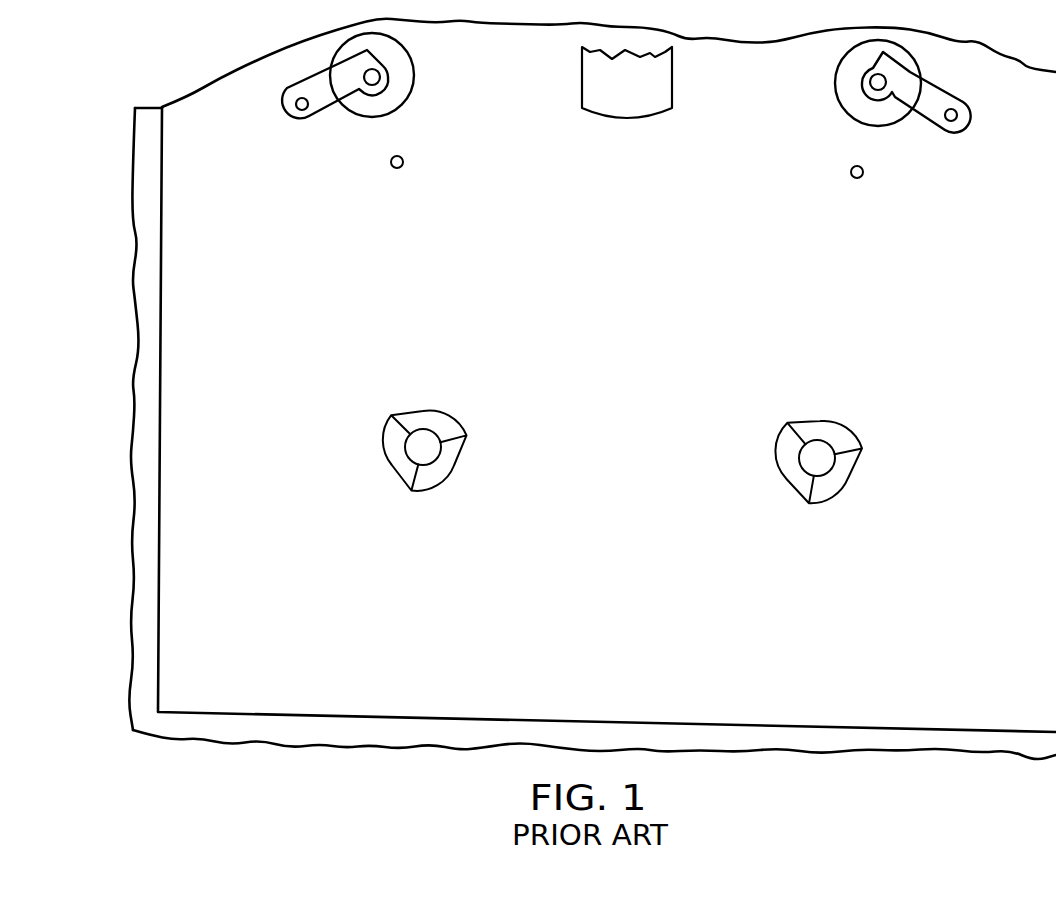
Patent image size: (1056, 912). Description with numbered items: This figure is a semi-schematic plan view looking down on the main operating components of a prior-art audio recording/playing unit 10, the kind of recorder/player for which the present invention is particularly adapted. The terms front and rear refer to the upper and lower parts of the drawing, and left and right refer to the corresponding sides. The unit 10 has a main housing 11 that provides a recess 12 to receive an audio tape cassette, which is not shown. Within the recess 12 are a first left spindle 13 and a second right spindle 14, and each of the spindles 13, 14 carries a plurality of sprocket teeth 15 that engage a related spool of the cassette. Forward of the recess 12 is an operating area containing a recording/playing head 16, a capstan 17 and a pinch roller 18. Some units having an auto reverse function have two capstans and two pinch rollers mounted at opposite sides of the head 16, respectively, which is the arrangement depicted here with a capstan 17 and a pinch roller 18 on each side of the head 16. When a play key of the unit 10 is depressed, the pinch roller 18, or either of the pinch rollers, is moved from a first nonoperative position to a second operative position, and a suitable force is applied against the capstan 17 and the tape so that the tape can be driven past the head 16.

The audio recording/playing unit 10 is at (90, 288).
The main housing 11 is at (135, 400).
The recess 12 is at (618, 618).
The first left spindle 13 is at (437, 452).
The second right spindle 14 is at (810, 465).
The sprocket teeth 15 is at (467, 437).
The recording/playing head 16 is at (655, 104).
The capstan 17 is at (400, 168).
The pinch roller 18 is at (370, 106).